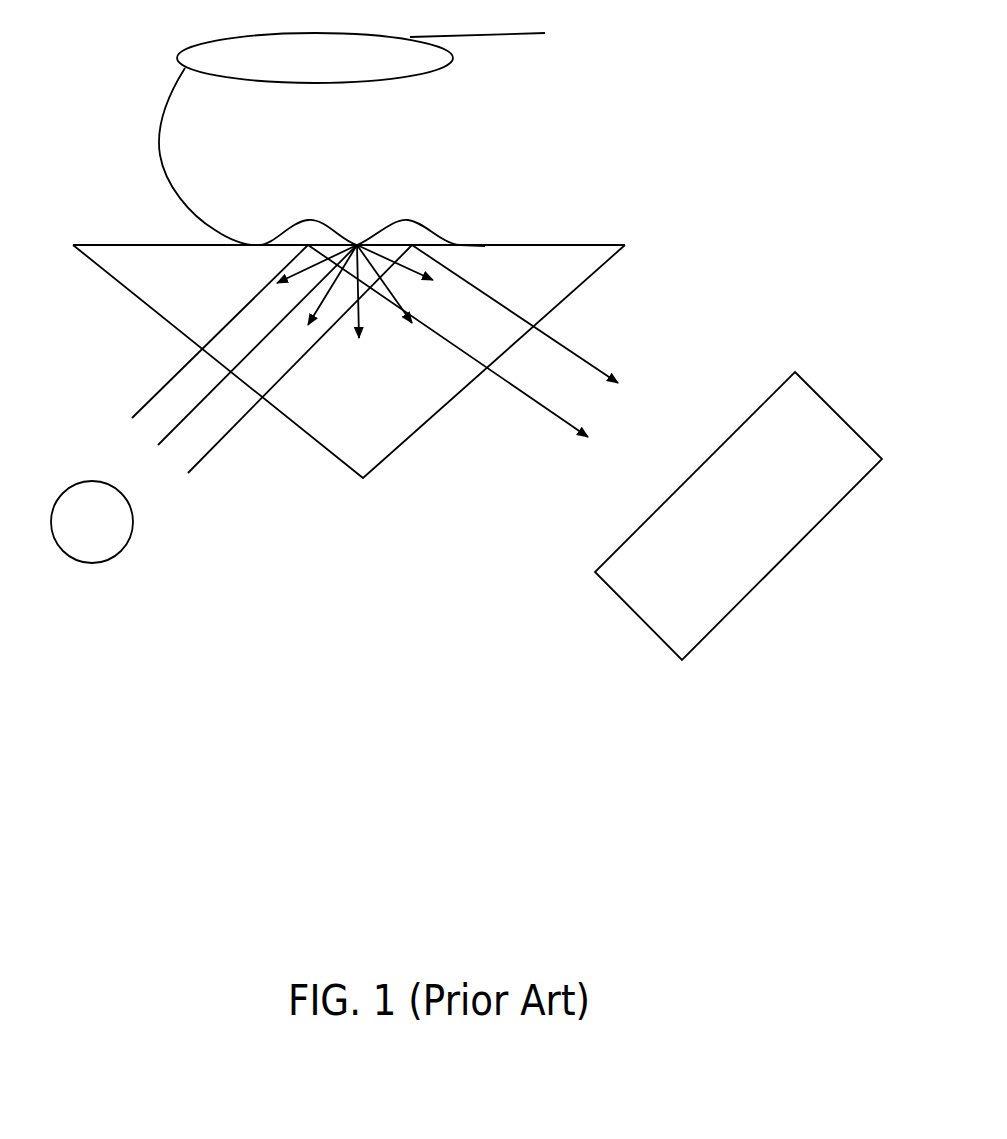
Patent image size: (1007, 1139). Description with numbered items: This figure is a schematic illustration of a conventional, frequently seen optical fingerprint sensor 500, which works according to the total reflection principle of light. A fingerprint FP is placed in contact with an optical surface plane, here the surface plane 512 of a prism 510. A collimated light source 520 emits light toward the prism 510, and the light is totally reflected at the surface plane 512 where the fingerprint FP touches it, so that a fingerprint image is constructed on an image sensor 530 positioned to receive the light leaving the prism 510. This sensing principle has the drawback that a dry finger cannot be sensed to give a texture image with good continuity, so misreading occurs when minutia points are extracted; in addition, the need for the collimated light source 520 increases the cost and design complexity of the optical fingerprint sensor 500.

The optical fingerprint sensor 500 is at (631, 147).
The prism 510 is at (143, 275).
The surface plane 512 is at (162, 245).
The collimated light source 520 is at (107, 545).
The image sensor 530 is at (613, 577).
The fingerprint FP is at (317, 220).